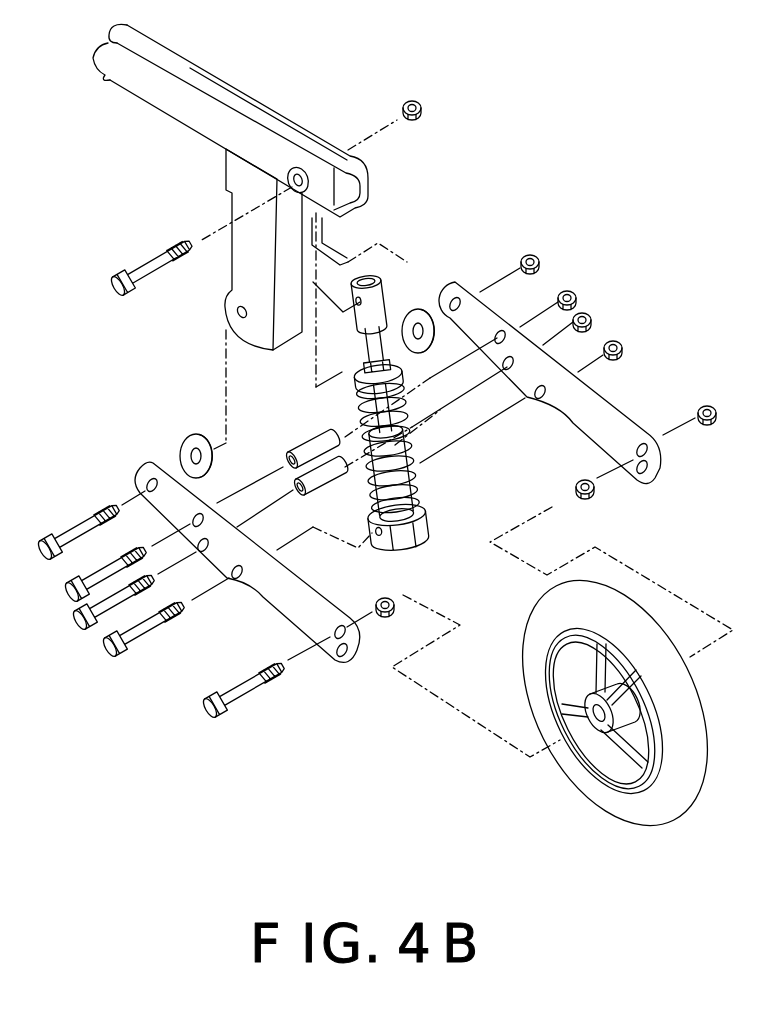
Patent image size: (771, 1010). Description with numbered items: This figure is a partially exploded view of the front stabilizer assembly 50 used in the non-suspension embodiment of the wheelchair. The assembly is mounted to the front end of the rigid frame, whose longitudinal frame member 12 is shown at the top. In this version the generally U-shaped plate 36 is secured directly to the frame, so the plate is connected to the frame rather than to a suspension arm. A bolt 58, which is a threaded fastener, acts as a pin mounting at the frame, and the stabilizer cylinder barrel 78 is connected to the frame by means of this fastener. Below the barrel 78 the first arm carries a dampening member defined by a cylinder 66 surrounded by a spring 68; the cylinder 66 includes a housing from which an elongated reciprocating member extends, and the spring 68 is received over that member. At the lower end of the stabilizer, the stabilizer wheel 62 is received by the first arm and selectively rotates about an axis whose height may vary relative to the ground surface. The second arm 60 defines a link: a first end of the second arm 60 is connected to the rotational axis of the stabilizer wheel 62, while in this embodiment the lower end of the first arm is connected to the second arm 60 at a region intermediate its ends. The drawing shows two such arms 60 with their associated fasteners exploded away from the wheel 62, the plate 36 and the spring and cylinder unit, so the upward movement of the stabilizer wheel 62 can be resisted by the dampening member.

The longitudinal frame member 12 is at (205, 78).
The U-shaped plate 36 is at (237, 176).
The bolt 58 is at (114, 286).
The stabilizer cylinder barrel 78 is at (385, 300).
The front stabilizer assembly 50 is at (396, 410).
The spring 68 is at (418, 470).
The cylinder 66 is at (420, 540).
The second arm 60 is at (612, 403).
The stabilizer wheel 62 is at (592, 797).